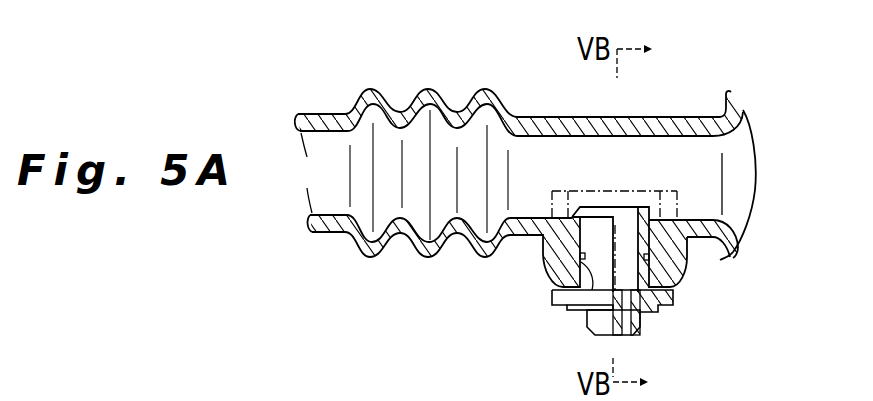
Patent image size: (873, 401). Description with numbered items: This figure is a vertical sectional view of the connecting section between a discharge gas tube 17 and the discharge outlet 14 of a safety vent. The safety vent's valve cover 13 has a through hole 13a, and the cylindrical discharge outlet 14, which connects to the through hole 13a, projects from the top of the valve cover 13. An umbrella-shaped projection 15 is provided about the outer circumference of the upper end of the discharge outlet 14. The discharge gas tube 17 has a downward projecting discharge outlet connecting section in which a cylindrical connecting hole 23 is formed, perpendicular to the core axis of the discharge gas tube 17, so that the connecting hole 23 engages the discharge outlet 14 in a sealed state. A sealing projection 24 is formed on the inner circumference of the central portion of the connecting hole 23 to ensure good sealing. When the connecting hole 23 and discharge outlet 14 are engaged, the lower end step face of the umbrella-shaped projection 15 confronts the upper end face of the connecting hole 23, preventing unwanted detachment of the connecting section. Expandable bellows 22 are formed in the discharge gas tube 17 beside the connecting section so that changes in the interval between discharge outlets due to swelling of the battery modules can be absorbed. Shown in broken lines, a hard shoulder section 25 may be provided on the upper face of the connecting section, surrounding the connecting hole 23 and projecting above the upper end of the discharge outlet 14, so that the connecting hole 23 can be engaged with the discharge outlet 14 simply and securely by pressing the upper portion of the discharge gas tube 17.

The valve cover 13 is at (673, 300).
The through hole 13a is at (623, 333).
The discharge outlet 14 is at (622, 227).
The umbrella-shaped projection 15 is at (662, 223).
The discharge gas tube 17 is at (552, 120).
The expandable bellows 22 is at (418, 100).
The connecting hole 23 is at (575, 305).
The sealing projection 24 is at (583, 256).
The shoulder section 25 is at (685, 172).